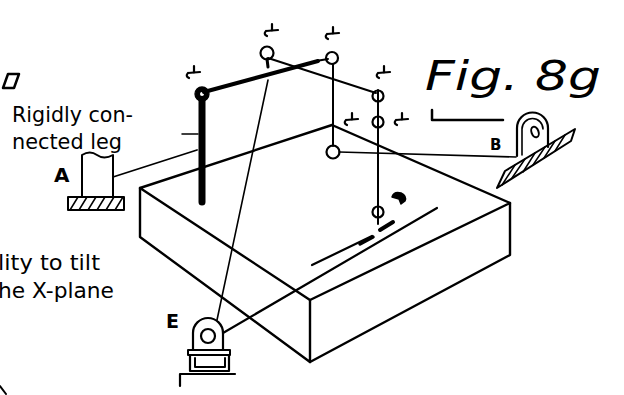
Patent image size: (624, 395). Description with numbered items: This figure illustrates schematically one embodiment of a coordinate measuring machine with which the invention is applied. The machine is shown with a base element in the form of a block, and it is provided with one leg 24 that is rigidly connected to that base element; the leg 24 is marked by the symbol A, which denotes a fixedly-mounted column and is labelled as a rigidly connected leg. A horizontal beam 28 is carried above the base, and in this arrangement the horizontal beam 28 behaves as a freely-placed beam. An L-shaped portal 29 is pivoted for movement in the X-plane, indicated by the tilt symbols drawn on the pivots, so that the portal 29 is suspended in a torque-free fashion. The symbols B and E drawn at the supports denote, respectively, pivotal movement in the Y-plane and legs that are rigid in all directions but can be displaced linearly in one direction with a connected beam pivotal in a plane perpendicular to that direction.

The leg 24 is at (198, 112).
The horizontal beam 28 is at (239, 80).
The L-shaped portal 29 is at (357, 84).